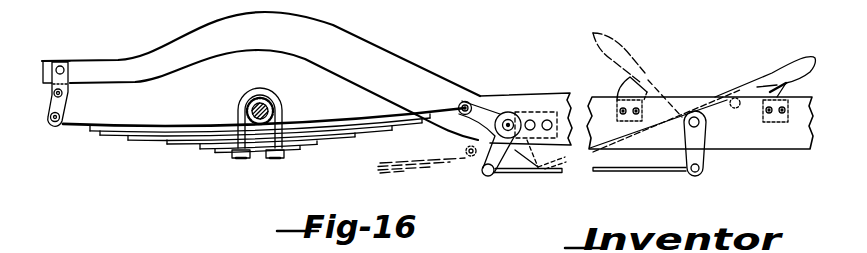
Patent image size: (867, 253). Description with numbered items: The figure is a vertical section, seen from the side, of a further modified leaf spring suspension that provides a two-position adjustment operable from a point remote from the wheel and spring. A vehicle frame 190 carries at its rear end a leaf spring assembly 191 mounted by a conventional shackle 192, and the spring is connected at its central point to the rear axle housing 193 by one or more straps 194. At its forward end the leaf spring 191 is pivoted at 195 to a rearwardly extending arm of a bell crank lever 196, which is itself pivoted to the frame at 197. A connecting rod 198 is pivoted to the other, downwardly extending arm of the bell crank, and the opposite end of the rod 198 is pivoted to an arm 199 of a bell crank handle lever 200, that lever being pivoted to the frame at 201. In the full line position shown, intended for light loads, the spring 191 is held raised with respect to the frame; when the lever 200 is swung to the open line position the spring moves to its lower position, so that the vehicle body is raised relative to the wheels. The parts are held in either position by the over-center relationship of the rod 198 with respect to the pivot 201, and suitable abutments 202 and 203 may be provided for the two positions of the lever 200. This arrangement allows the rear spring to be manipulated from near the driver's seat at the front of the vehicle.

The vehicle frame 190 is at (373, 47).
The leaf spring assembly 191 is at (197, 148).
The shackle 192 is at (68, 104).
The rear axle housing 193 is at (265, 100).
The straps 194 is at (277, 110).
The pivot 195 is at (470, 100).
The bell crank lever 196 is at (487, 115).
The pivot 197 is at (480, 131).
The connecting rod 198 is at (553, 177).
The arm 199 is at (698, 158).
The bell crank handle lever 200 is at (745, 84).
The pivot 201 is at (708, 124).
The abutment 202 is at (815, 63).
The abutment 203 is at (633, 87).